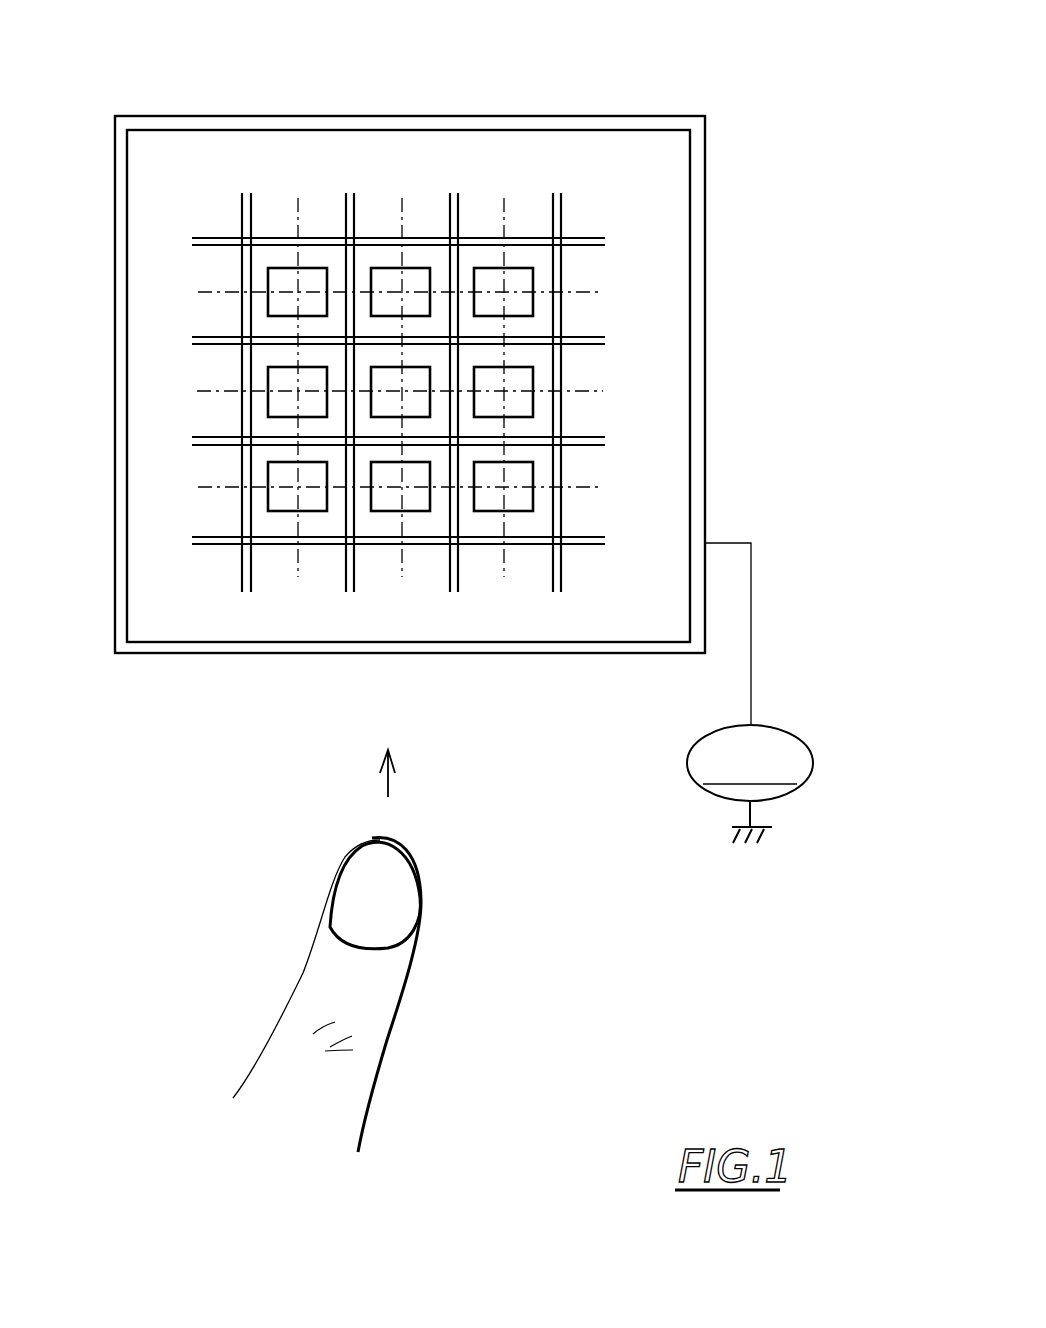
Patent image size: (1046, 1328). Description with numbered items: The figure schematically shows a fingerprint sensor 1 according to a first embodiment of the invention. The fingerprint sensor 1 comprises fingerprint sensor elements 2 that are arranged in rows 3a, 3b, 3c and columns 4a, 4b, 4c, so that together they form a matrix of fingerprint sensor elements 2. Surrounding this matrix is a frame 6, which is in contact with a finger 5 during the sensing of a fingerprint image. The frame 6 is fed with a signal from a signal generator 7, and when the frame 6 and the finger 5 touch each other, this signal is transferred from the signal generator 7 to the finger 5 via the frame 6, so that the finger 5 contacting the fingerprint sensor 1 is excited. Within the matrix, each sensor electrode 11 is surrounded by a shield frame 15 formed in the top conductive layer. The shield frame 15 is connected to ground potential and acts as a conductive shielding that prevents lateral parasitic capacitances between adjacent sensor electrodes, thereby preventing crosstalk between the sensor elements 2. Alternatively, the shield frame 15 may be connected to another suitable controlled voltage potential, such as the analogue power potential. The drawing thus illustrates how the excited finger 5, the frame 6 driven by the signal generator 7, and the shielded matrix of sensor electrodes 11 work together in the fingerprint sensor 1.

The fingerprint sensor 1 is at (435, 366).
The fingerprint sensor element 2 is at (638, 270).
The row 3a is at (210, 291).
The row 3b is at (212, 390).
The row 3c is at (214, 486).
The column 4a is at (297, 577).
The column 4b is at (401, 577).
The column 4c is at (503, 577).
The finger 5 is at (393, 980).
The frame 6 is at (697, 452).
The signal generator 7 is at (790, 716).
The sensor electrode 11 is at (518, 311).
The shield frame 15 is at (557, 420).